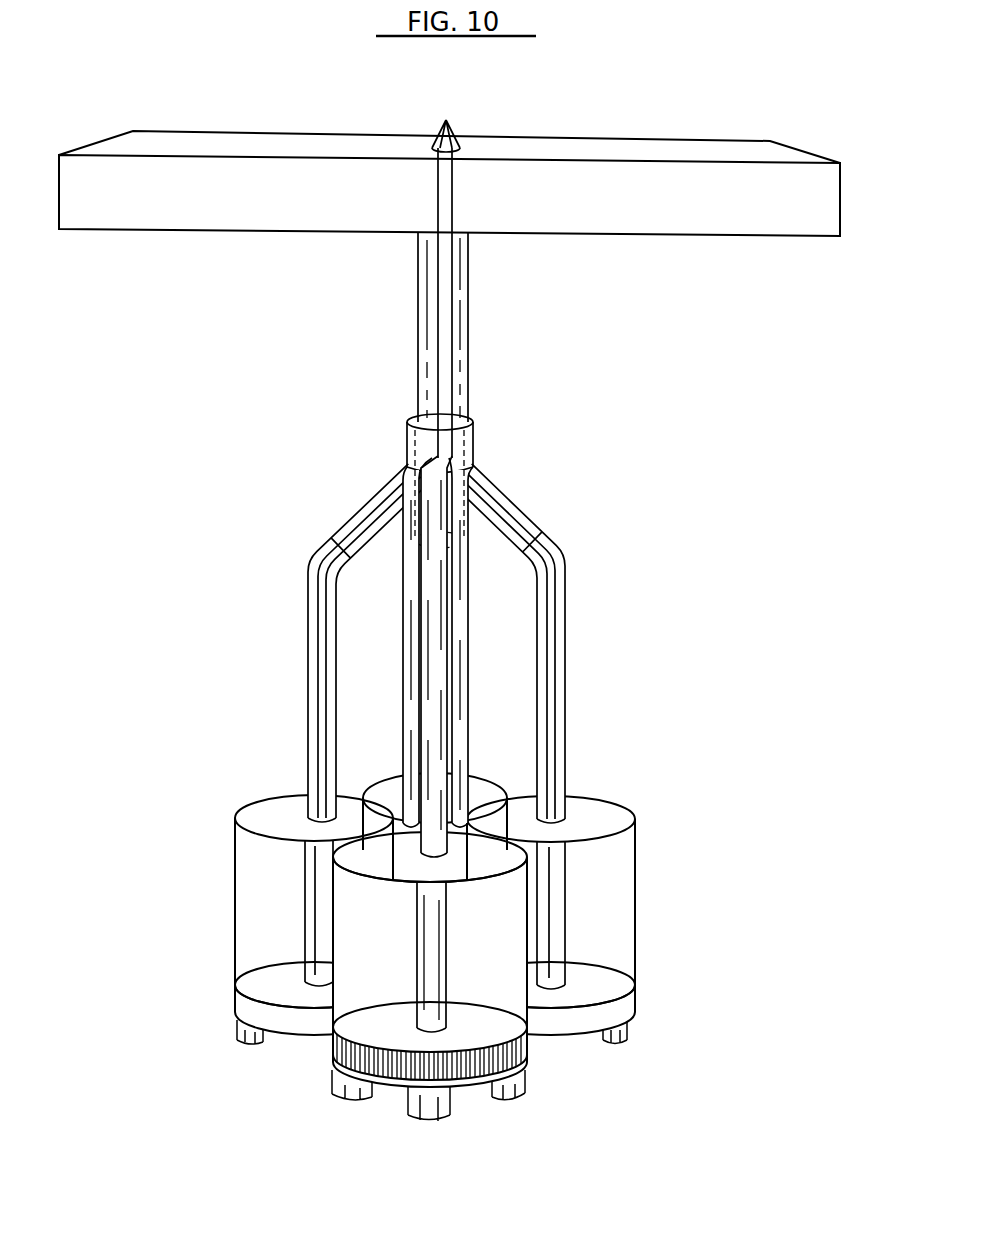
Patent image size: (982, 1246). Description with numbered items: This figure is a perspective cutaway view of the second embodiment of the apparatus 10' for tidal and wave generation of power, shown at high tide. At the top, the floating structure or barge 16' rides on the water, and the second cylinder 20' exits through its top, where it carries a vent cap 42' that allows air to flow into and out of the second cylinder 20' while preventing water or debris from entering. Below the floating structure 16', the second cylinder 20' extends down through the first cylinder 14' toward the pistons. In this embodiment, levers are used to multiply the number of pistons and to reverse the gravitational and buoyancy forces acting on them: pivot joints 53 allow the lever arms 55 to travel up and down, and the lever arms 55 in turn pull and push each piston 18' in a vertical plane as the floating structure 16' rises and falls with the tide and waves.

The apparatus for tidal and wave generation of power 10' is at (482, 590).
The first cylinder 14' is at (486, 390).
The floating structure or barge 16' is at (482, 162).
The piston 18' is at (435, 951).
The second cylinder 20' is at (486, 590).
The vent cap 42' is at (491, 116).
The pivot joints 53 is at (560, 543).
The lever arms 55 is at (310, 667).